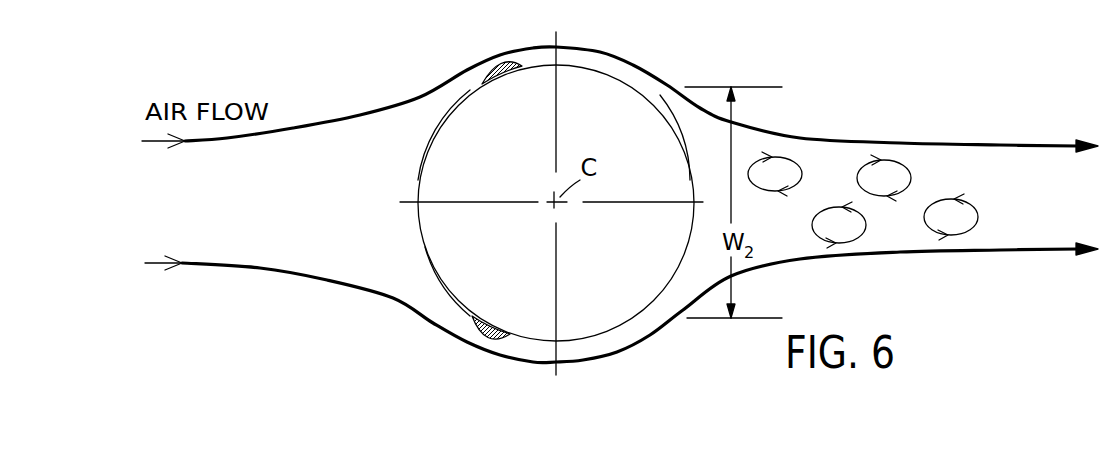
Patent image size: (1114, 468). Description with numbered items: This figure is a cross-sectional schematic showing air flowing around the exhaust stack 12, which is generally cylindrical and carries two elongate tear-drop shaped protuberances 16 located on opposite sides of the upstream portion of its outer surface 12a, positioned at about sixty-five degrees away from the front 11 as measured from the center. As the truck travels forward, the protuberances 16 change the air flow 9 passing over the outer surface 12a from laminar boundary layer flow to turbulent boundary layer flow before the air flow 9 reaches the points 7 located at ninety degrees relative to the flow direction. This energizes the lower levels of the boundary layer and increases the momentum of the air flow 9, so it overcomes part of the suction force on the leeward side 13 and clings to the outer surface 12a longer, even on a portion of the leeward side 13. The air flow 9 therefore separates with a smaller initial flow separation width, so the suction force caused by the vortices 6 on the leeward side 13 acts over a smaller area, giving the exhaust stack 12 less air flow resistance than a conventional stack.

The vortices 6 is at (897, 172).
The points 7 is at (560, 60).
The air flow 9 is at (298, 127).
The front 11 is at (418, 178).
The exhaust stack 12 is at (613, 93).
The outer surface 12a is at (424, 247).
The leeward side 13 is at (680, 140).
The protuberances 16 is at (497, 62).